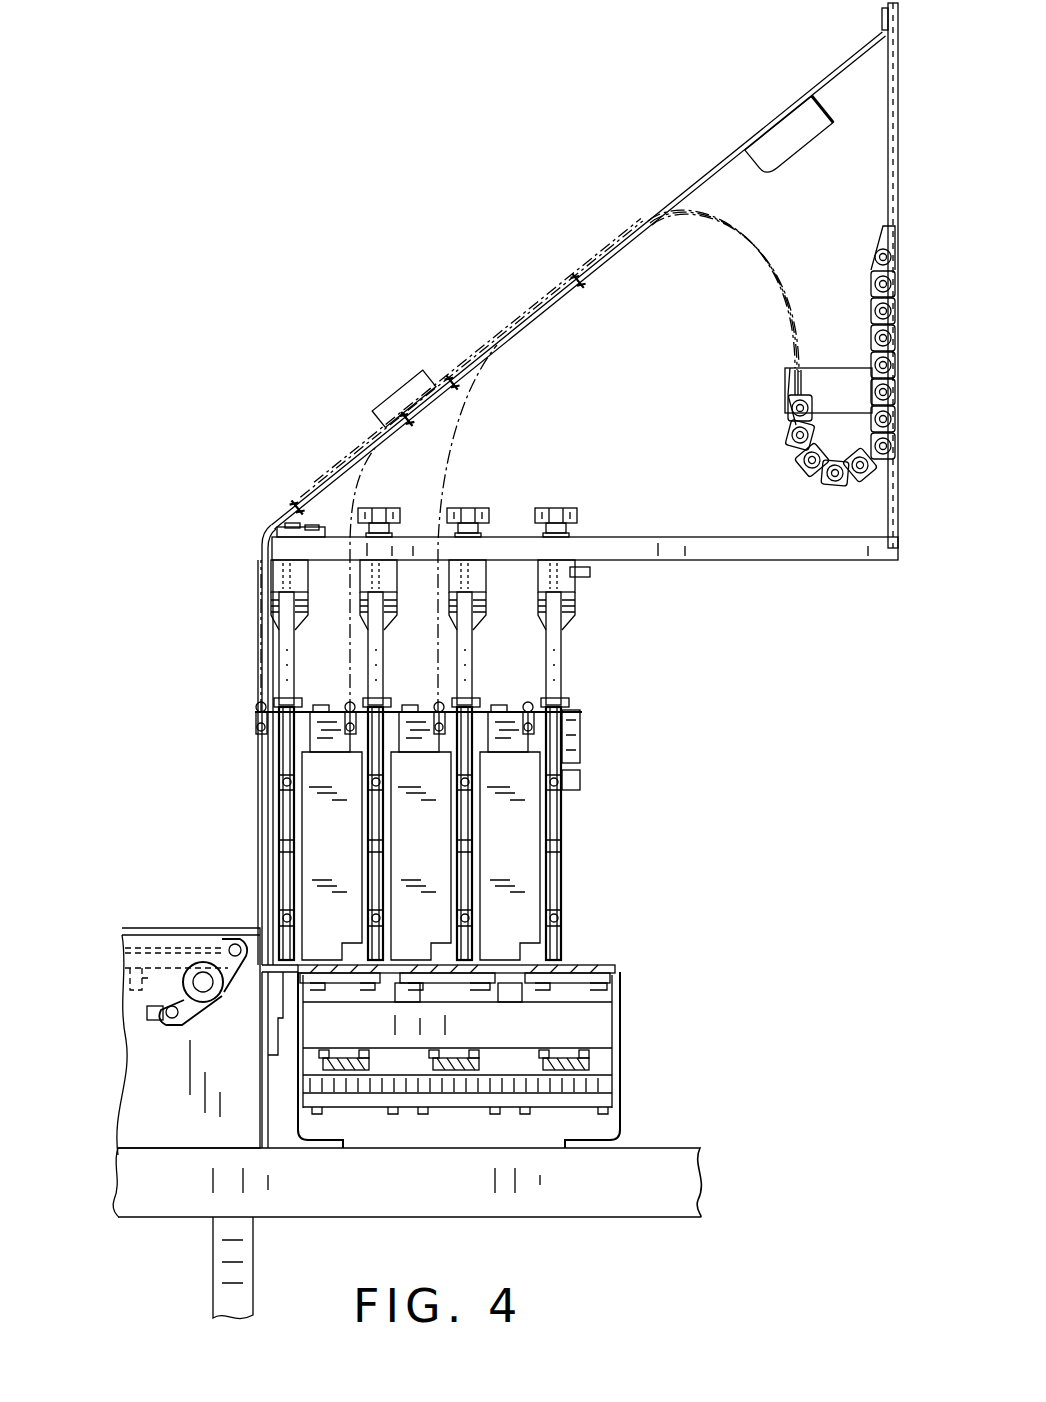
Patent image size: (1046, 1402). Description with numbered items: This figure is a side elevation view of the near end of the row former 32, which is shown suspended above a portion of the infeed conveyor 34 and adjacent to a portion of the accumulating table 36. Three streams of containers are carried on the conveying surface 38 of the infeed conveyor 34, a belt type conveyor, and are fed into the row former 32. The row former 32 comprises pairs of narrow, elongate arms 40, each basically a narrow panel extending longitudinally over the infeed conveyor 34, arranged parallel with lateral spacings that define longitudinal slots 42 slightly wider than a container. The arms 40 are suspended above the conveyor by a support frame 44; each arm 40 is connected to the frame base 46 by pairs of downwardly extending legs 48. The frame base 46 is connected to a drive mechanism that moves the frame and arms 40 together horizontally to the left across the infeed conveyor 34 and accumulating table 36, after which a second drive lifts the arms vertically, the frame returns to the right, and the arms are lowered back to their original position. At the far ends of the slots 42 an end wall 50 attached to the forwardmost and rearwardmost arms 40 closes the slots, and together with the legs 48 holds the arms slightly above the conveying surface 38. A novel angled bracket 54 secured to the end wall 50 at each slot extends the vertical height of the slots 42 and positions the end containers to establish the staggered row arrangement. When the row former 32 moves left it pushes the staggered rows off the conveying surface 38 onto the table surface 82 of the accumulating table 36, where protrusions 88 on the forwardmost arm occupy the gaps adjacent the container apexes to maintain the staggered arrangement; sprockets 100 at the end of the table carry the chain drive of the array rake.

The row former 32 is at (196, 595).
The infeed conveyor 34 is at (618, 954).
The accumulating table 36 is at (146, 924).
The conveying surface 38 is at (572, 960).
The arms 40 is at (383, 890).
The longitudinal slots 42 is at (322, 832).
The support frame 44 is at (315, 460).
The frame base 46 is at (503, 548).
The legs 48 is at (283, 665).
The end wall 50 is at (574, 720).
The angled bracket 54 is at (418, 762).
The table surface 82 is at (152, 948).
The protrusions 88 is at (268, 824).
The sprockets 100 is at (210, 1004).